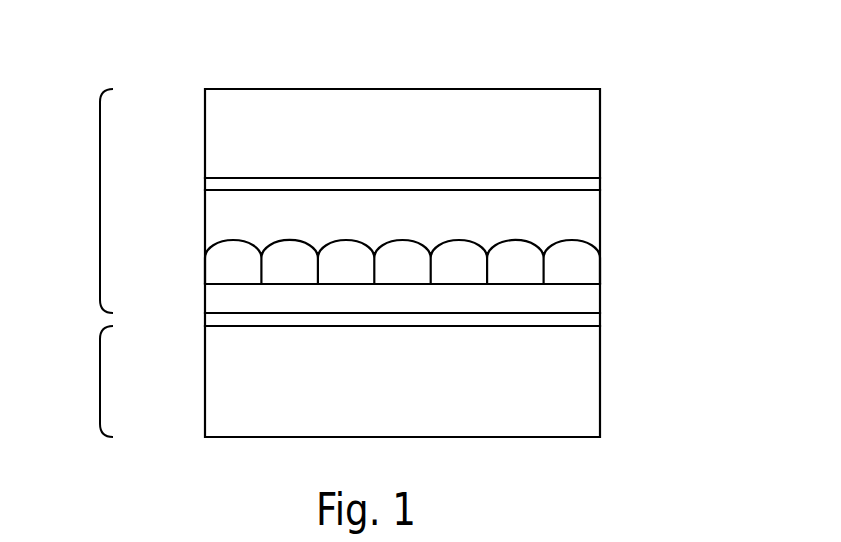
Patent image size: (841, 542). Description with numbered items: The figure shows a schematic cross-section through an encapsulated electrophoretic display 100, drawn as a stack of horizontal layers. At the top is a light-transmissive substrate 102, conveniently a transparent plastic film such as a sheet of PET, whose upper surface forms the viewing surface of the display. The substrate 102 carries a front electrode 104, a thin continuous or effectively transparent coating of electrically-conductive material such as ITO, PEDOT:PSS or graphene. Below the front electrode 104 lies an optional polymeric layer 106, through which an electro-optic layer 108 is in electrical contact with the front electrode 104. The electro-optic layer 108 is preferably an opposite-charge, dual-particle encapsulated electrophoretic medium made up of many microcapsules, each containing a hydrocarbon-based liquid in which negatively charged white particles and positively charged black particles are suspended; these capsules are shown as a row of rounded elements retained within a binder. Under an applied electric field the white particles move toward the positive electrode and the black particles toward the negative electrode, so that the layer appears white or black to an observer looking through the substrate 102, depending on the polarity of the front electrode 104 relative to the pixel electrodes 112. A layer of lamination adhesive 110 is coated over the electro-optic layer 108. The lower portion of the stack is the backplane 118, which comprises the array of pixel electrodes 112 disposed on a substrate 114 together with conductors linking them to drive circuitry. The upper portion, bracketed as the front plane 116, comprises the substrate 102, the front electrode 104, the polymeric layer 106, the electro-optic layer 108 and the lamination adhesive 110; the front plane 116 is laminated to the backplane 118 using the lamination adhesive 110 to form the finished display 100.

The encapsulated electrophoretic display 100 is at (584, 62).
The light-transmissive substrate 102 is at (601, 137).
The front electrode 104 is at (205, 184).
The polymeric layer 106 is at (601, 227).
The electro-optic layer 108 is at (222, 268).
The lamination adhesive layer 110 is at (601, 297).
The pixel electrodes 112 is at (205, 319).
The backplane substrate 114 is at (601, 389).
The front plane 116 is at (100, 202).
The backplane 118 is at (100, 382).